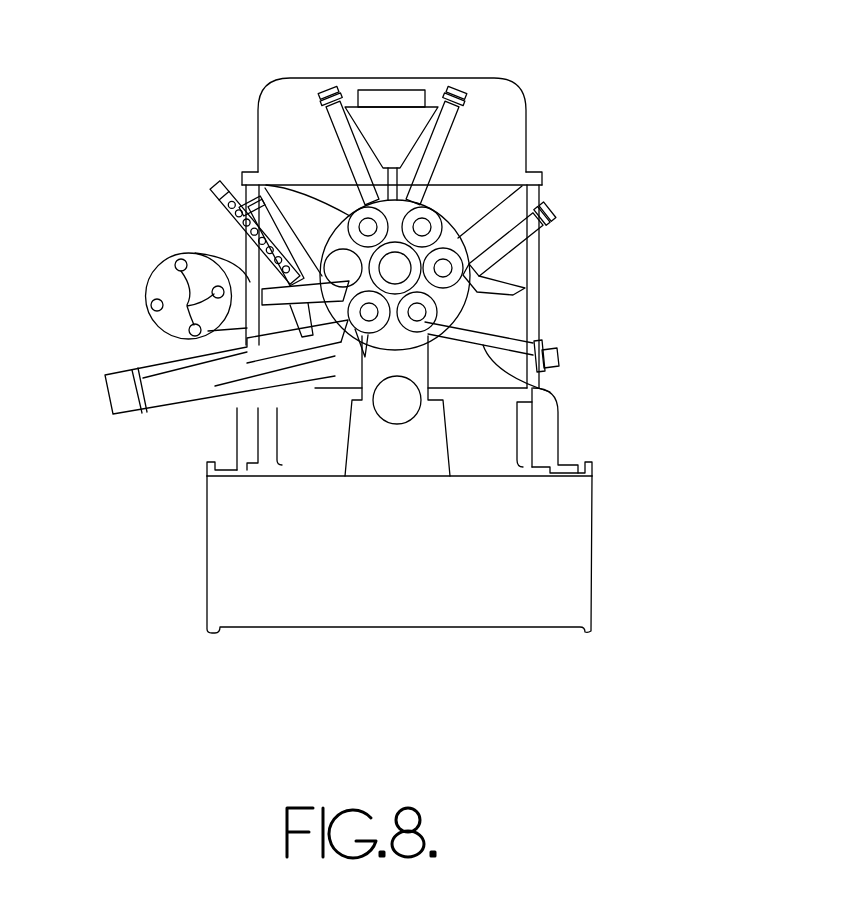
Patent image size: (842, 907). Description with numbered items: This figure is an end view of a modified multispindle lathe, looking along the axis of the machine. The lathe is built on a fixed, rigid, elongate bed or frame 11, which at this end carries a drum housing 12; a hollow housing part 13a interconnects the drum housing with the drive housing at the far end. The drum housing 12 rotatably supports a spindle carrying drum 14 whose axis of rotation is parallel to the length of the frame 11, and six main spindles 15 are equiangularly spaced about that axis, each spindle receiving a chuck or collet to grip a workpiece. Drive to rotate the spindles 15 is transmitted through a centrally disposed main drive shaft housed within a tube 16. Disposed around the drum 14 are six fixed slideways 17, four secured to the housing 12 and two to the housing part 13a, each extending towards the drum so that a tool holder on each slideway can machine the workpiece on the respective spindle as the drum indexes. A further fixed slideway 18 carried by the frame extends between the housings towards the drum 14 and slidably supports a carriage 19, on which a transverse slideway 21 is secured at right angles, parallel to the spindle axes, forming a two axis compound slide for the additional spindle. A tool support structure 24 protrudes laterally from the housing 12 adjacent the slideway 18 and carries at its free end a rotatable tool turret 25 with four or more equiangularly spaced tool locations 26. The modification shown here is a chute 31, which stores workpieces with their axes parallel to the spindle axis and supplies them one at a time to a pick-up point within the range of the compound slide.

The bed or frame 11 is at (553, 573).
The drum housing 12 is at (490, 316).
The hollow housing part 13a is at (390, 133).
The spindle carrying drum 14 is at (400, 262).
The main spindles 15 is at (425, 223).
The tube 16 is at (446, 266).
The fixed slideways 17 is at (360, 147).
The further fixed slideway 18 is at (193, 383).
The carriage 19 is at (282, 360).
The transverse slideway 21 is at (300, 337).
The tool support structure 24 is at (247, 327).
The tool turret 25 is at (163, 285).
The tool locations 26 is at (190, 334).
The chute 31 is at (212, 187).